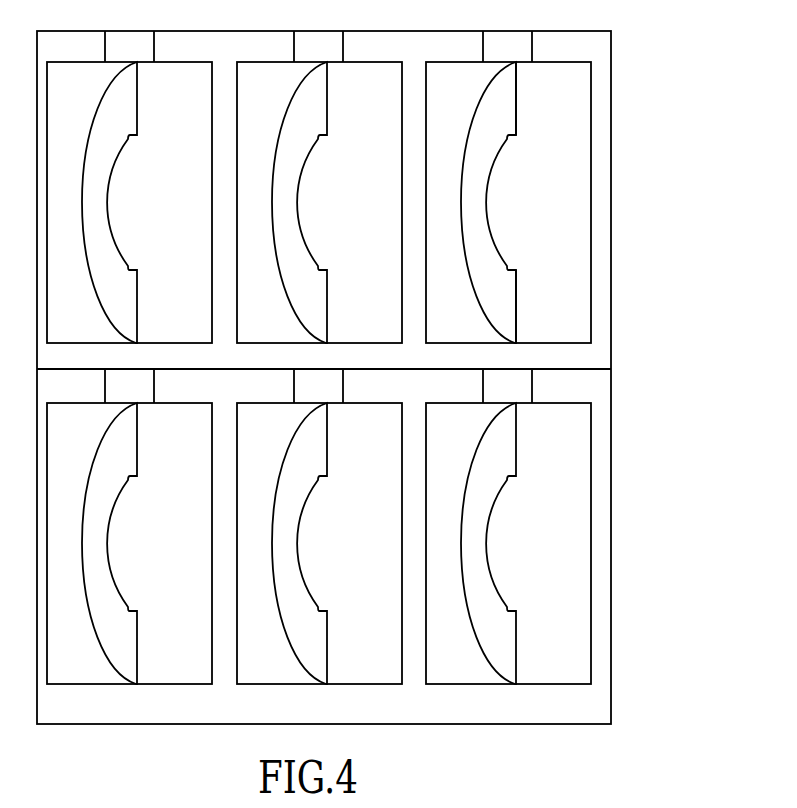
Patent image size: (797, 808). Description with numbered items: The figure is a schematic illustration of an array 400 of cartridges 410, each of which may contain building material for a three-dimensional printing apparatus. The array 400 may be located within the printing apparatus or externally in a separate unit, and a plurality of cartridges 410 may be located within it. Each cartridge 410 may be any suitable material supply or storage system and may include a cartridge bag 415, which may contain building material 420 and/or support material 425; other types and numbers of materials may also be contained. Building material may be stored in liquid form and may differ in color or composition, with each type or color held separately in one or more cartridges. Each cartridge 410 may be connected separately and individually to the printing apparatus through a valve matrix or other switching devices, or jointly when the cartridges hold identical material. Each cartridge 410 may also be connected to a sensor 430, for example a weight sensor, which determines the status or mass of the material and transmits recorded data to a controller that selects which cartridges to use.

The array 400 is at (626, 414).
The cartridge 410 is at (591, 187).
The cartridge bag 415 is at (517, 313).
The building material 420 is at (416, 202).
The support material 425 is at (333, 543).
The sensor 430 is at (533, 47).